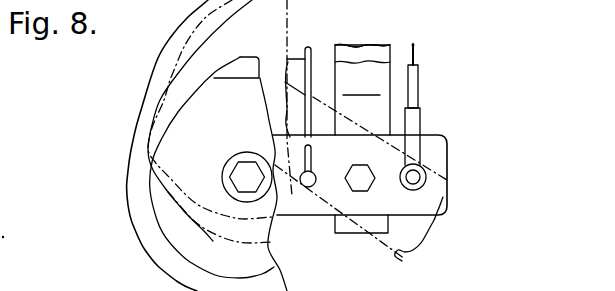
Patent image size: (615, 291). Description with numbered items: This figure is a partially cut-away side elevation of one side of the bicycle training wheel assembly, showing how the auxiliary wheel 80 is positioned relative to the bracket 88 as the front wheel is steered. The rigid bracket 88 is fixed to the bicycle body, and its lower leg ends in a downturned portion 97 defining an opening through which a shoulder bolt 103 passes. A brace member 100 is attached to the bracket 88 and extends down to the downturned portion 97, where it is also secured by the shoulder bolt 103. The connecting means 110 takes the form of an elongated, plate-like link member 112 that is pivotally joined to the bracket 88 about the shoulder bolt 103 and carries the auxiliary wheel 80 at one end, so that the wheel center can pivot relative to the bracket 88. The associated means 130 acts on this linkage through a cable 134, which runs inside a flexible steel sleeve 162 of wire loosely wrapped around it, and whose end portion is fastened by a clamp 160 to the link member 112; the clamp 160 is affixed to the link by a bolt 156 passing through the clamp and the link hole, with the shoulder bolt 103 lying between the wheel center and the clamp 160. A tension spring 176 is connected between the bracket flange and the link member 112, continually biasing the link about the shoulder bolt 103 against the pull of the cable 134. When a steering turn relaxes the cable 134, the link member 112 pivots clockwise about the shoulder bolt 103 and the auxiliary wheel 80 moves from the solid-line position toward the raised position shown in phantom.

The auxiliary wheel 80 is at (158, 57).
The associated means 130 is at (2, 284).
The tension spring 176 is at (284, 62).
The bracket 88 is at (364, 43).
The brace member 100 is at (362, 89).
The cable 134 is at (416, 48).
The connecting means 110 is at (443, 99).
The flexible steel sleeve 162 is at (418, 80).
The link member 112 is at (446, 134).
The clamp 160 is at (420, 123).
The bolt 156 is at (424, 168).
The shoulder bolt 103 is at (360, 192).
The downturned portion 97 is at (389, 228).